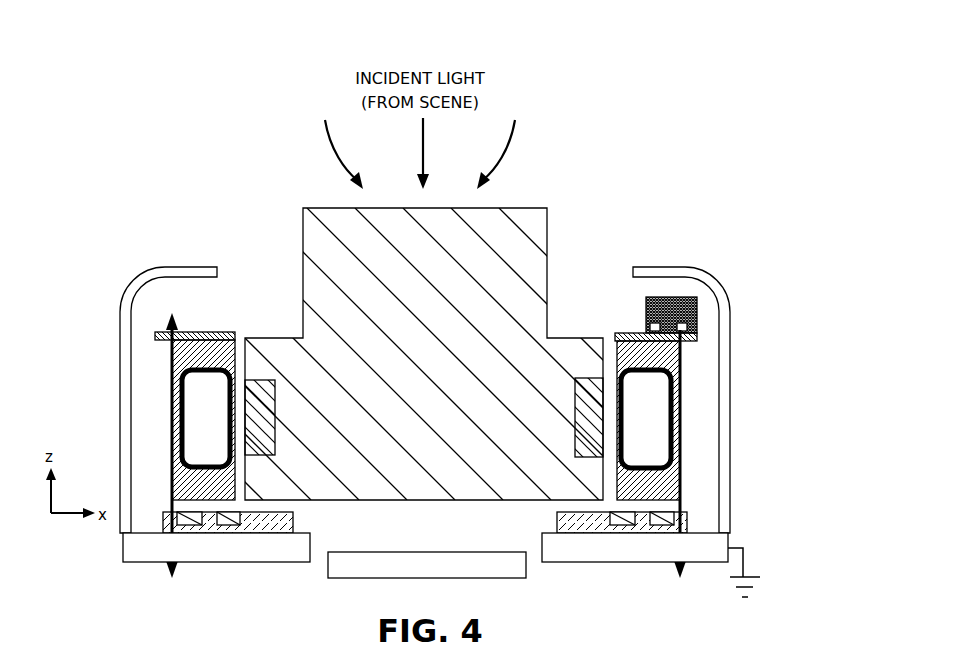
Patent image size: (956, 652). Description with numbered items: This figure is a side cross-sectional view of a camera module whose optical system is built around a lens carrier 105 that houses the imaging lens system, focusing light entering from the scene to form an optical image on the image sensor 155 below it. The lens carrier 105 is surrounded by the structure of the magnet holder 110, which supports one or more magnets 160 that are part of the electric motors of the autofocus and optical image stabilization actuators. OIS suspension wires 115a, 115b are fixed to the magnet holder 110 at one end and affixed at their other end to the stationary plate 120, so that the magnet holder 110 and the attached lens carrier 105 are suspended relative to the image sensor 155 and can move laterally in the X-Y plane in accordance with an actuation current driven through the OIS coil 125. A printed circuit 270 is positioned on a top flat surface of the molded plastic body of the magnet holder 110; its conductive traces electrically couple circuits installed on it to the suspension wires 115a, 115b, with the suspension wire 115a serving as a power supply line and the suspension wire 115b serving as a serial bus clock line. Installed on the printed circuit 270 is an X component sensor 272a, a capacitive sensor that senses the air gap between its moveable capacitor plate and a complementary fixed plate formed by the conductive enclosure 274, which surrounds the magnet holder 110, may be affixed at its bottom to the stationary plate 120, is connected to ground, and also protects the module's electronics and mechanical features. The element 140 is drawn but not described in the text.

The lens carrier 105 is at (530, 208).
The magnet holder 110 is at (658, 485).
The OIS suspension wire 115a is at (680, 432).
The OIS suspension wire 115b is at (172, 355).
The stationary plate 120 is at (135, 548).
The OIS coil 125 is at (222, 527).
The autofocus coil 140 is at (262, 402).
The image sensor 155 is at (427, 565).
The magnet 160 is at (426, 419).
The printed circuit 270 is at (202, 332).
The X component sensor 272a is at (653, 297).
The conductive enclosure 274 is at (723, 307).